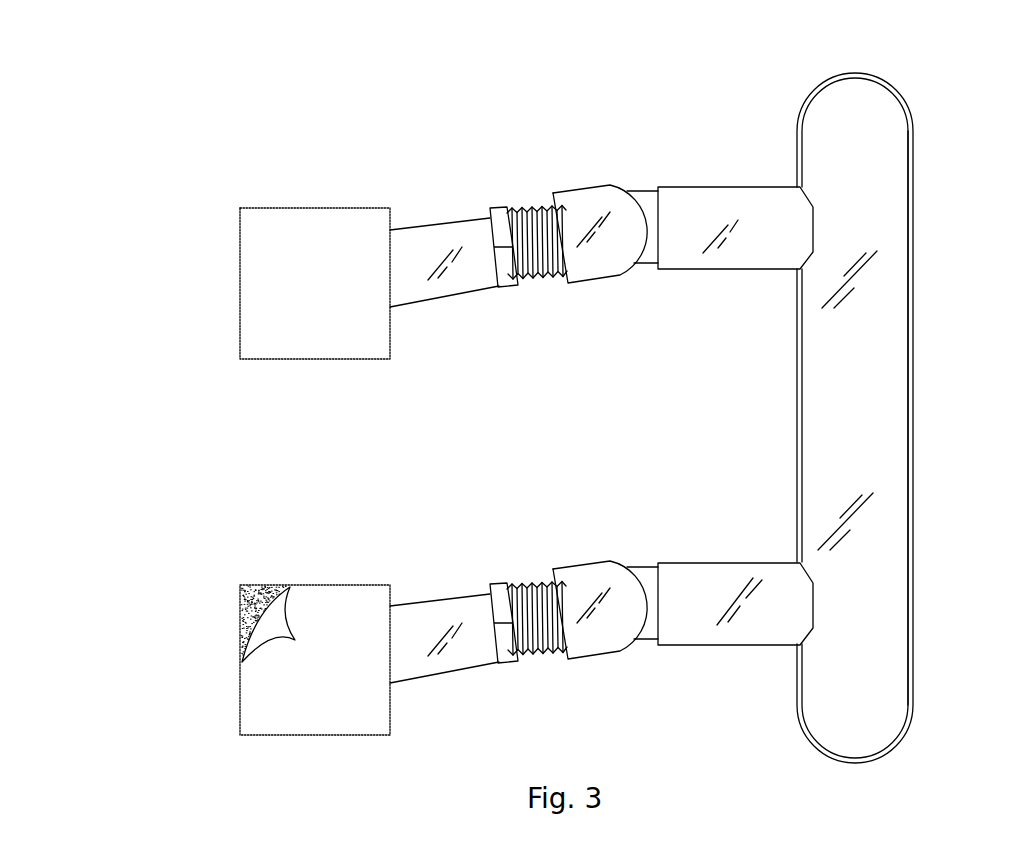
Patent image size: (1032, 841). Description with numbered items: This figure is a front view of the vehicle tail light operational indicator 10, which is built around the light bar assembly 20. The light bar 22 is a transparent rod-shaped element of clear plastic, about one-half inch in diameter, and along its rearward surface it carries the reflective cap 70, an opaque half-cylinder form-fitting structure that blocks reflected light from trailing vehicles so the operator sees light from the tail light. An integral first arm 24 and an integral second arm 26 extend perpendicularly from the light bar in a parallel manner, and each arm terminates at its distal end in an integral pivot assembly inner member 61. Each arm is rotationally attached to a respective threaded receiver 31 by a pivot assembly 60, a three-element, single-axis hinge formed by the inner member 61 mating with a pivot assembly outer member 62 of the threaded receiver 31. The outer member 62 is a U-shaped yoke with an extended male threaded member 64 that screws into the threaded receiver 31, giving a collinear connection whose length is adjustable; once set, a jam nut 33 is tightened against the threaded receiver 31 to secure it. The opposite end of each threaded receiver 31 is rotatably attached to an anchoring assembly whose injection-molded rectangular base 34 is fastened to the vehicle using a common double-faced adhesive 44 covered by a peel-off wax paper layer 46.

The vehicle tail light operational indicator 10 is at (90, 157).
The light bar assembly 20 is at (920, 532).
The light bar 22 is at (885, 230).
The first arm 24 is at (682, 257).
The second arm 26 is at (682, 633).
The threaded receiver 31 is at (420, 290).
The jam nut 33 is at (508, 285).
The rectangular base 34 is at (240, 283).
The double-faced adhesive 44 is at (263, 597).
The peel-off wax paper layer 46 is at (280, 620).
The pivot assembly 60 is at (582, 152).
The pivot assembly inner member 61 is at (653, 203).
The pivot assembly outer member 62 is at (577, 201).
The extended male threaded member 64 is at (512, 212).
The reflective cap 70 is at (913, 260).